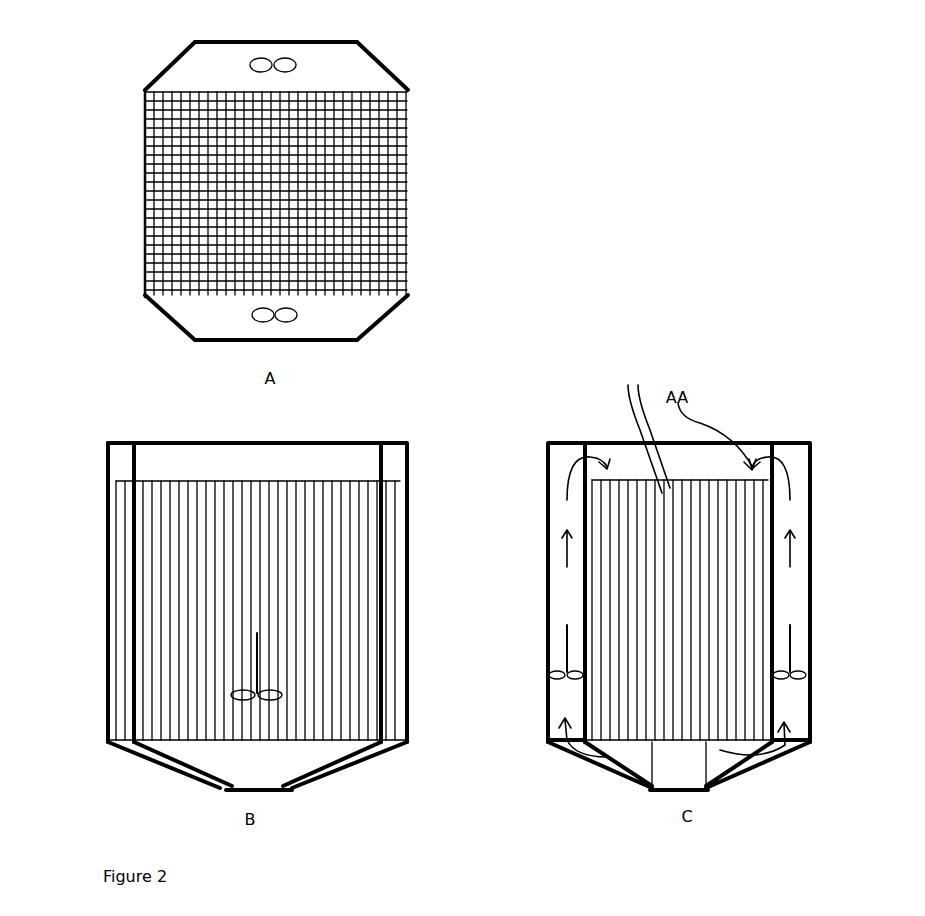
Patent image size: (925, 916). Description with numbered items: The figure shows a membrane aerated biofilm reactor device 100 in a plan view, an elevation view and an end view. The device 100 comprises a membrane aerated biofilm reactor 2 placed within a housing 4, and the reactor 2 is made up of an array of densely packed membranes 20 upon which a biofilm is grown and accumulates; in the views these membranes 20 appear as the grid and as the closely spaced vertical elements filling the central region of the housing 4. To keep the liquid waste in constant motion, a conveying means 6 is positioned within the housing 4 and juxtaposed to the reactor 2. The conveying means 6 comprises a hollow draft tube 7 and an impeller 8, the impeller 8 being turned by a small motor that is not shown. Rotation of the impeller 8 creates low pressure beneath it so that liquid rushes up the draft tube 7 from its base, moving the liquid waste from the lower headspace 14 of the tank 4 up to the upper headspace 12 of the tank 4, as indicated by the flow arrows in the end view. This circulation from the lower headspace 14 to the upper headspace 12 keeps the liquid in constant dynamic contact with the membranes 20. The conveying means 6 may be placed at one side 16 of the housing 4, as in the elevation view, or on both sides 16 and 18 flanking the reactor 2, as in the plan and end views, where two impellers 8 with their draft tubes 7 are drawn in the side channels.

The membrane aerated biofilm reactor 2 is at (400, 150).
The housing 4 is at (145, 188).
The conveying means 6 is at (178, 75).
The hollow draft tube 7 is at (240, 61).
The impeller 8 is at (282, 60).
The upper headspace 12 is at (637, 453).
The lower headspace 14 is at (280, 762).
The side of the housing 16 is at (547, 570).
The side of the housing 18 is at (812, 625).
The array of densely packed membranes 20 is at (396, 278).
The MABR device 100 is at (437, 56).